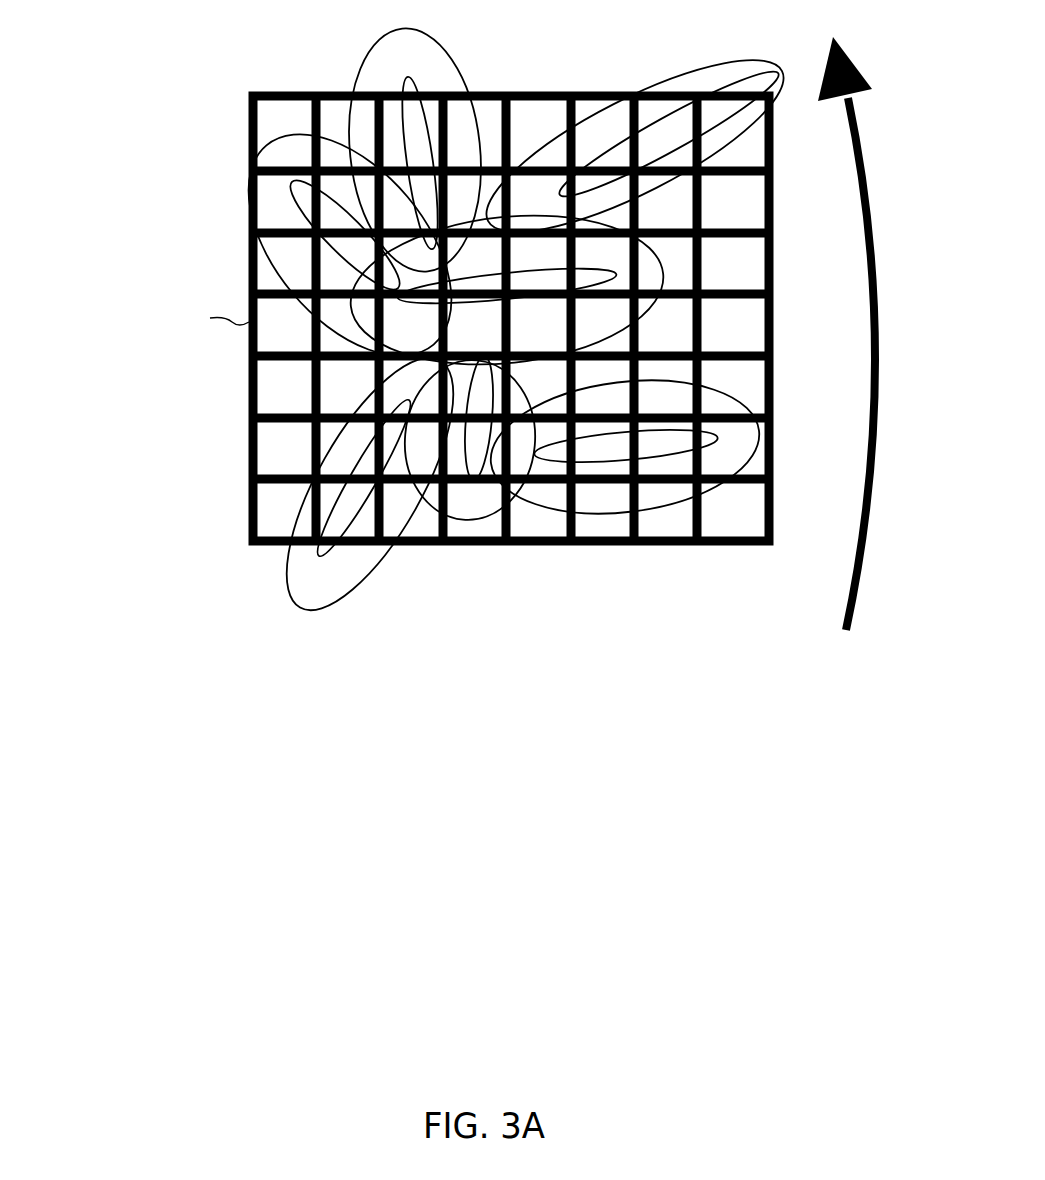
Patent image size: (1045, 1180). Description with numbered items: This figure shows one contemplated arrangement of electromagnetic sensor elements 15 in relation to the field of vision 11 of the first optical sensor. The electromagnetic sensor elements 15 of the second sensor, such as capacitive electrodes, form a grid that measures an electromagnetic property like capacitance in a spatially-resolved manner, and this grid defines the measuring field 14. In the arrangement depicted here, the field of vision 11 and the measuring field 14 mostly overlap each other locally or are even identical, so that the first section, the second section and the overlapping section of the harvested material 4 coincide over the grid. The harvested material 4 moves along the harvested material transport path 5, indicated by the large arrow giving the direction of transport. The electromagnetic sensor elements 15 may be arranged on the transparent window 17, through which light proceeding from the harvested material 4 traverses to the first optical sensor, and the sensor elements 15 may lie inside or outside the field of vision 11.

The harvested material 4 is at (437, 53).
The harvested material transport path 5 is at (880, 380).
The field of vision 11 is at (402, 278).
The measuring field 14 is at (288, 78).
The electromagnetic sensor element 15 is at (693, 65).
The transparent window 17 is at (775, 255).